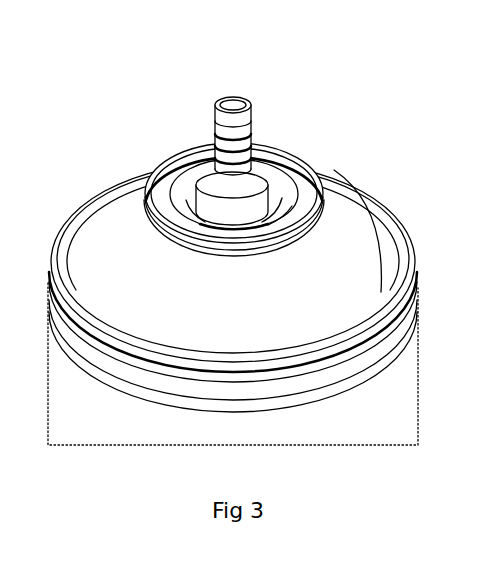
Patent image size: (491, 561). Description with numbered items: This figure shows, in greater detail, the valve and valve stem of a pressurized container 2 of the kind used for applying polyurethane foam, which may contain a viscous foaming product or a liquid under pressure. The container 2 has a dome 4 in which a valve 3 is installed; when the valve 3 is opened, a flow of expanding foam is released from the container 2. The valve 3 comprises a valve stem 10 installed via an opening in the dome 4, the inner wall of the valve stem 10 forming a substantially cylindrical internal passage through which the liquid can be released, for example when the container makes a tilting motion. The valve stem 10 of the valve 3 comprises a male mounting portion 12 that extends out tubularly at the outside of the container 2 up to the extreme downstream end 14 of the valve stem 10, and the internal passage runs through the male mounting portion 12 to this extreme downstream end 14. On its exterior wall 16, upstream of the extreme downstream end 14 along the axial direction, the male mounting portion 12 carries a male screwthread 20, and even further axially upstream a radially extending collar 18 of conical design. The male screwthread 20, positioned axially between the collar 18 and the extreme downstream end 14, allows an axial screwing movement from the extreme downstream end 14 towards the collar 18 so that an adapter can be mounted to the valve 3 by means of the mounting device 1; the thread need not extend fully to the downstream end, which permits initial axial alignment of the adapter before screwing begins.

The mounting device 1 is at (269, 364).
The pressurized container 2 is at (387, 388).
The valve 3 is at (333, 161).
The dome 4 is at (368, 253).
The valve stem 10 is at (200, 158).
The male mounting portion 12 is at (204, 126).
The extreme downstream end 14 is at (225, 85).
The exterior wall 16 is at (250, 121).
The collar 18 is at (212, 172).
The male screwthread 20 is at (253, 134).